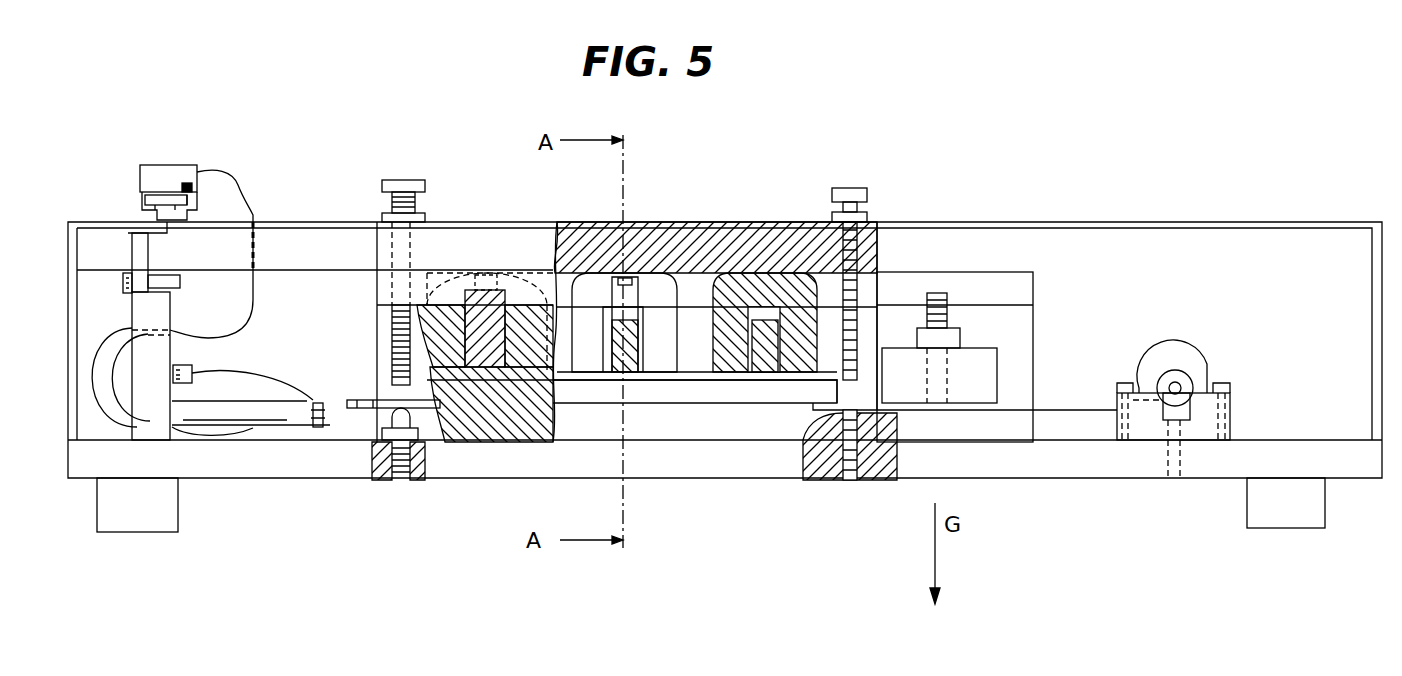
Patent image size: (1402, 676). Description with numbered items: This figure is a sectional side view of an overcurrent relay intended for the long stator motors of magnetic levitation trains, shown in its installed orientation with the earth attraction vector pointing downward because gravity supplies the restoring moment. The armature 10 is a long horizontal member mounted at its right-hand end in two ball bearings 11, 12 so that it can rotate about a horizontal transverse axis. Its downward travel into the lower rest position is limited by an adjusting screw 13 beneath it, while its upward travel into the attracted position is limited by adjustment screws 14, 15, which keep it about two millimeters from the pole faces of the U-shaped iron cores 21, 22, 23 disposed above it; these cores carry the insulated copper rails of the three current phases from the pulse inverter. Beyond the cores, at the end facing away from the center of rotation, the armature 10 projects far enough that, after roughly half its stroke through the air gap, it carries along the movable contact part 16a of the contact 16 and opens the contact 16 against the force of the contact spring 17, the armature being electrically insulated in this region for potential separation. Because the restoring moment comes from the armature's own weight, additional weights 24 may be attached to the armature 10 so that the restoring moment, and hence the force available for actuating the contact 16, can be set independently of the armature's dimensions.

The armature 10 is at (698, 397).
The ball bearing 11 is at (1199, 402).
The ball bearing 12 is at (1180, 385).
The adjusting screw 13 is at (430, 480).
The adjustment screw 14 is at (402, 180).
The adjustment screw 15 is at (870, 186).
The contact 16 is at (323, 399).
The movable contact part 16a is at (347, 394).
The contact spring 17 is at (270, 343).
The U-shaped iron core 21 is at (515, 272).
The U-shaped iron core 22 is at (663, 307).
The U-shaped iron core 23 is at (767, 282).
The additional weight 24 is at (965, 358).